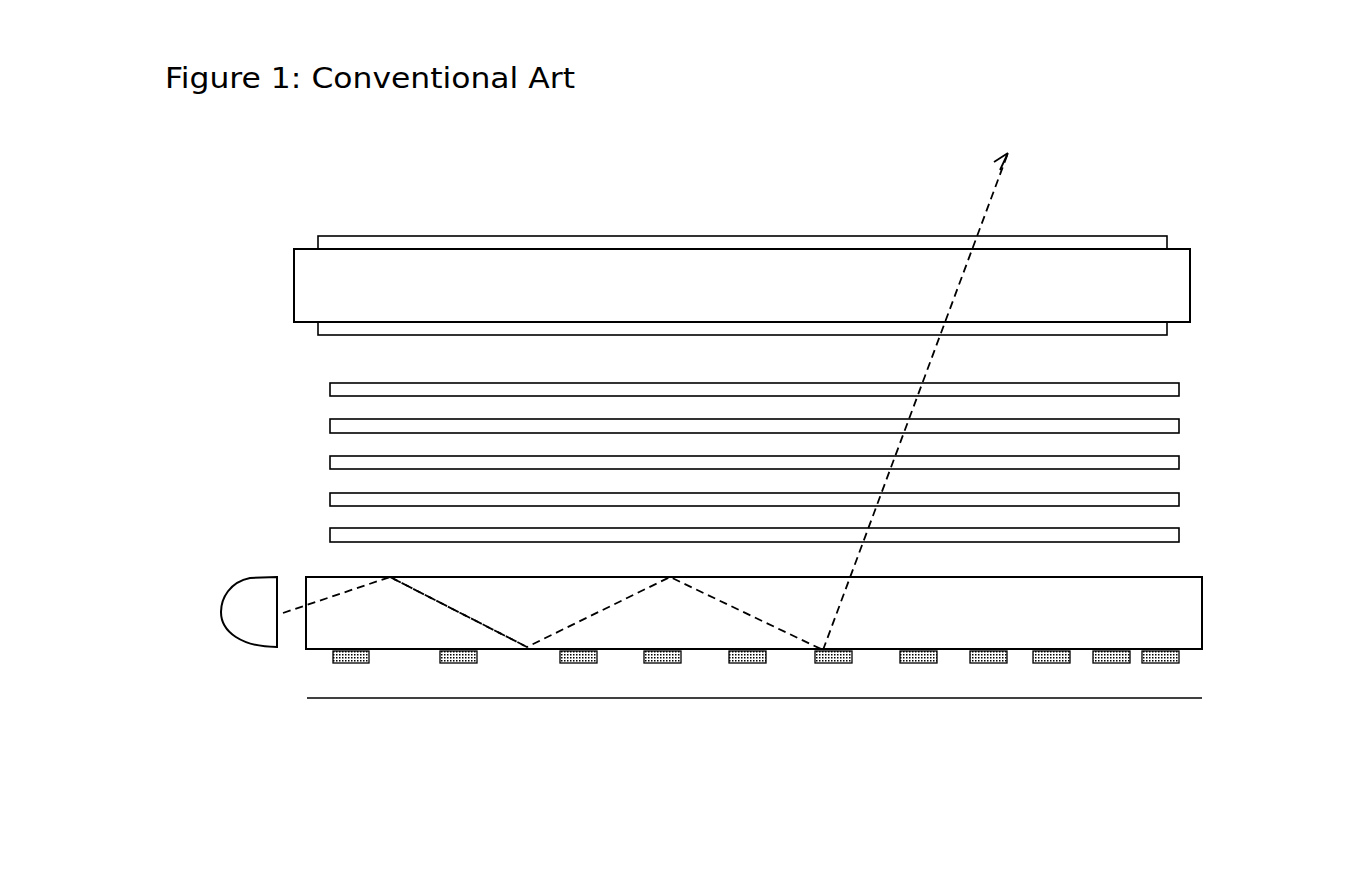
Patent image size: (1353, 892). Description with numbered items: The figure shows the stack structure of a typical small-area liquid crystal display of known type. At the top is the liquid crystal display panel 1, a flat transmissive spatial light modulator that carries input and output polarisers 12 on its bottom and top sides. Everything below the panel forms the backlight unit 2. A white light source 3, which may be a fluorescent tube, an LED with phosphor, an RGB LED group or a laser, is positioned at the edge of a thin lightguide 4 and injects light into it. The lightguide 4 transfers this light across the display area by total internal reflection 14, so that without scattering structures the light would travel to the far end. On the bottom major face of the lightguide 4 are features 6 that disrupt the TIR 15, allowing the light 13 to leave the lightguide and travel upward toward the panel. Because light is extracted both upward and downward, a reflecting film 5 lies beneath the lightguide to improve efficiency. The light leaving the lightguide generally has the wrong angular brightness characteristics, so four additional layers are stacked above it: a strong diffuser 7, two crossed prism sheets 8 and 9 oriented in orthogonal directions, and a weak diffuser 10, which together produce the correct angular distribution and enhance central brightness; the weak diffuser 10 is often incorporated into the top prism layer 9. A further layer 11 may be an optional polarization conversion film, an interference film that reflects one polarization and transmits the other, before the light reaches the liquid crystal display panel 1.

The liquid crystal display panel 1 is at (772, 290).
The backlight unit 2 is at (723, 491).
The white light source 3 is at (225, 603).
The lightguide 4 is at (310, 638).
The reflector sheet 5 is at (388, 693).
The features 6 is at (582, 660).
The strong diffuser 7 is at (330, 535).
The prism sheet 8 is at (330, 500).
The prism sheet 9 is at (330, 464).
The weak diffuser 10 is at (330, 425).
The polarization conversion film 11 is at (330, 388).
The input and output polarisers 12 is at (346, 324).
The light 13 is at (988, 207).
The total internal reflection 14 is at (532, 647).
The disrupted TIR 15 is at (817, 655).